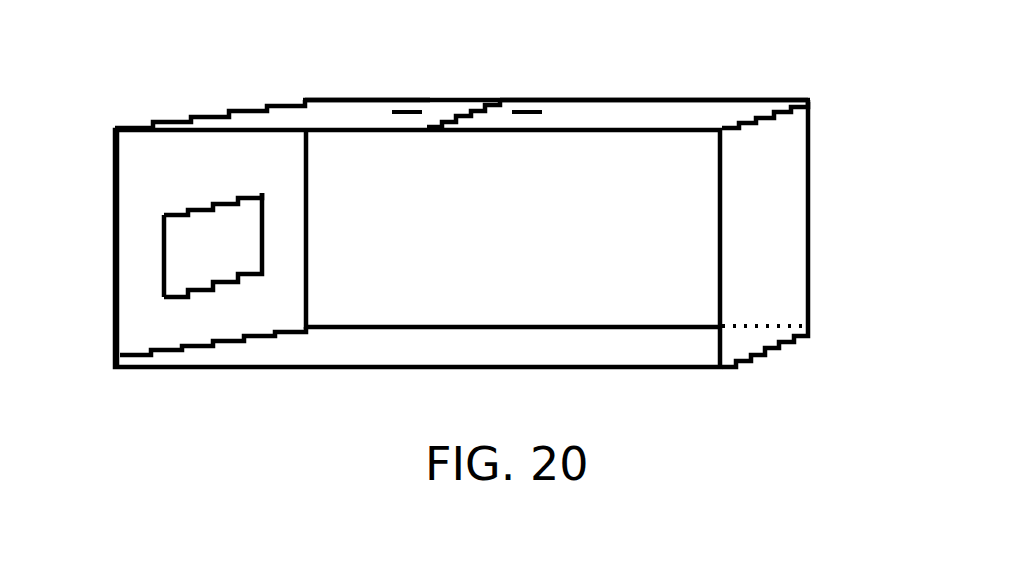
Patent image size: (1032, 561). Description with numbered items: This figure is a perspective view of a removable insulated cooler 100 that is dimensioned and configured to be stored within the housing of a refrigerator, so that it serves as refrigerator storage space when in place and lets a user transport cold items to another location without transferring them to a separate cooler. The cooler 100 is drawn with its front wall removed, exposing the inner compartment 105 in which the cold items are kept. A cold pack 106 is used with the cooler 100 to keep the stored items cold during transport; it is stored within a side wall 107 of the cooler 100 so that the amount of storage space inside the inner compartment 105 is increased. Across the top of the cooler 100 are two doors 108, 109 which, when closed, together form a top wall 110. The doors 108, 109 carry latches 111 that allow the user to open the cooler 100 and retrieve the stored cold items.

The insulated cooler 100 is at (838, 202).
The inner compartment 105 is at (621, 231).
The cold pack 106 is at (187, 250).
The side wall 107 is at (152, 175).
The door 108 is at (297, 113).
The door 109 is at (610, 113).
The top wall 110 is at (495, 100).
The latches 111 is at (418, 106).